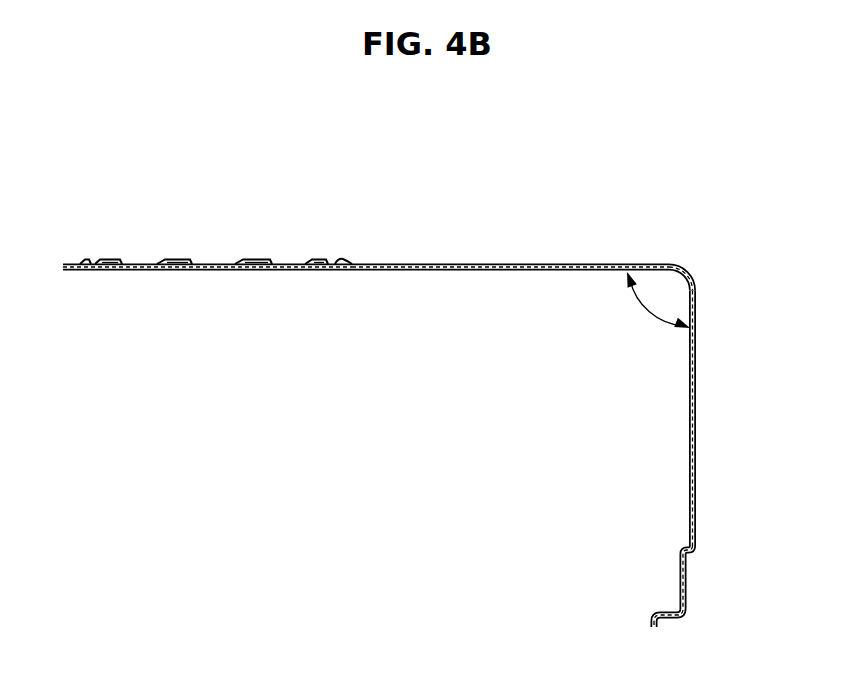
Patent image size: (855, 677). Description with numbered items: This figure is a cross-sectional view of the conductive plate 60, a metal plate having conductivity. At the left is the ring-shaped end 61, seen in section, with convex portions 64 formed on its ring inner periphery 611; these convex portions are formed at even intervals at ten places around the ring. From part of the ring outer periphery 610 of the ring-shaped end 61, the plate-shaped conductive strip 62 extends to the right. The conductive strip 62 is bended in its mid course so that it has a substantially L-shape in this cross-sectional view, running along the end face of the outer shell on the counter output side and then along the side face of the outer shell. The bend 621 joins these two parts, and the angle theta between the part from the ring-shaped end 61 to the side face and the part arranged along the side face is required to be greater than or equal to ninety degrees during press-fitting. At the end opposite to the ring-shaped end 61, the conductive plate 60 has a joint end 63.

The conductive plate 60 is at (430, 381).
The ring-shaped end 61 is at (253, 251).
The ring outer periphery 610 is at (360, 245).
The ring inner periphery 611 is at (287, 272).
The conductive strip 62 is at (564, 376).
The corner bend 621 is at (697, 270).
The joint end 63 is at (705, 562).
The convex portions 64 is at (172, 258).